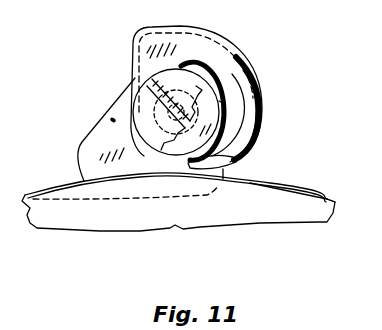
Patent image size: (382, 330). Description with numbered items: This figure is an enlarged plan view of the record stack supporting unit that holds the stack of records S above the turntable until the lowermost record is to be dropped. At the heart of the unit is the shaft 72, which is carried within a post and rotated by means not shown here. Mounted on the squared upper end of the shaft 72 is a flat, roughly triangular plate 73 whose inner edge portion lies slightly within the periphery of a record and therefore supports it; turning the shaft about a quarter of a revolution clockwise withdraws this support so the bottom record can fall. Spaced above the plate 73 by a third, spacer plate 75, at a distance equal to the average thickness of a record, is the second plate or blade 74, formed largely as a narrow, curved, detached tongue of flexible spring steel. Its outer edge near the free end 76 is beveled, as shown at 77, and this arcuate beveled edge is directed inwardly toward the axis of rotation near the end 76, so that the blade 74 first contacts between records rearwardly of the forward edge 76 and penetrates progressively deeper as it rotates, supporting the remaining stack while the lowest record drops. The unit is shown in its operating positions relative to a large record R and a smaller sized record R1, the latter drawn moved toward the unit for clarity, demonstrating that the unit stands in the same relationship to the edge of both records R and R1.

The shaft 72 is at (170, 114).
The triangular plate 73 is at (100, 129).
The blade 74 is at (240, 107).
The spacer plate 75 is at (228, 92).
The free end 76 is at (236, 163).
The beveled outer edge 77 is at (258, 128).
The record R is at (296, 191).
The smaller sized record R1 is at (325, 198).
The stack of records S is at (123, 240).